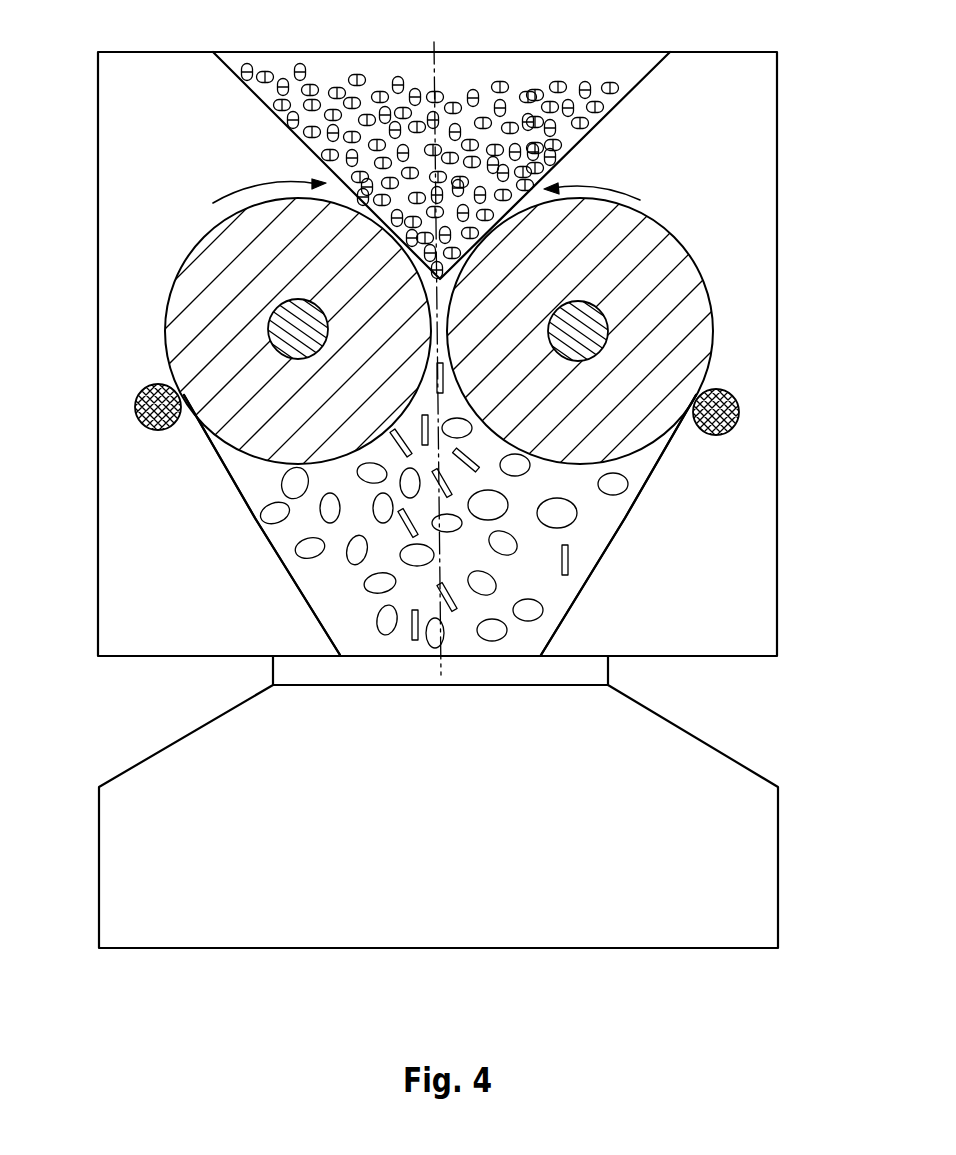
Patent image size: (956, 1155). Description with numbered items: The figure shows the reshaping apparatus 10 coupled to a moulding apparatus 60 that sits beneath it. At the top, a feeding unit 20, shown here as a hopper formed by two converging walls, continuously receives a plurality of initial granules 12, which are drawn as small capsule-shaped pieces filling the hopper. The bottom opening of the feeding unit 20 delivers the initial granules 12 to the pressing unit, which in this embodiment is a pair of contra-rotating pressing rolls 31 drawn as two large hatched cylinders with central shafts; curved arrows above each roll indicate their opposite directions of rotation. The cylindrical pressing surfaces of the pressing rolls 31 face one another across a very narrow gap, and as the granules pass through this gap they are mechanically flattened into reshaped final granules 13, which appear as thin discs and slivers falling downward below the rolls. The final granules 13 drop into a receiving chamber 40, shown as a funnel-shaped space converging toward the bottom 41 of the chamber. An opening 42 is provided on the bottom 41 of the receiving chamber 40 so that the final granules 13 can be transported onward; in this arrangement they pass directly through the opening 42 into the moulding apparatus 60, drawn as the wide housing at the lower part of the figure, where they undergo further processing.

The reshaping apparatus 10 is at (777, 95).
The initial granules 12 is at (556, 85).
The feeding unit 20 is at (657, 60).
The contra-rotating pressing rolls 31 is at (183, 322).
The final granules 13 is at (628, 486).
The receiving chamber 40 is at (613, 537).
The bottom 41 is at (546, 651).
The opening 42 is at (359, 656).
The moulding apparatus 60 is at (778, 871).